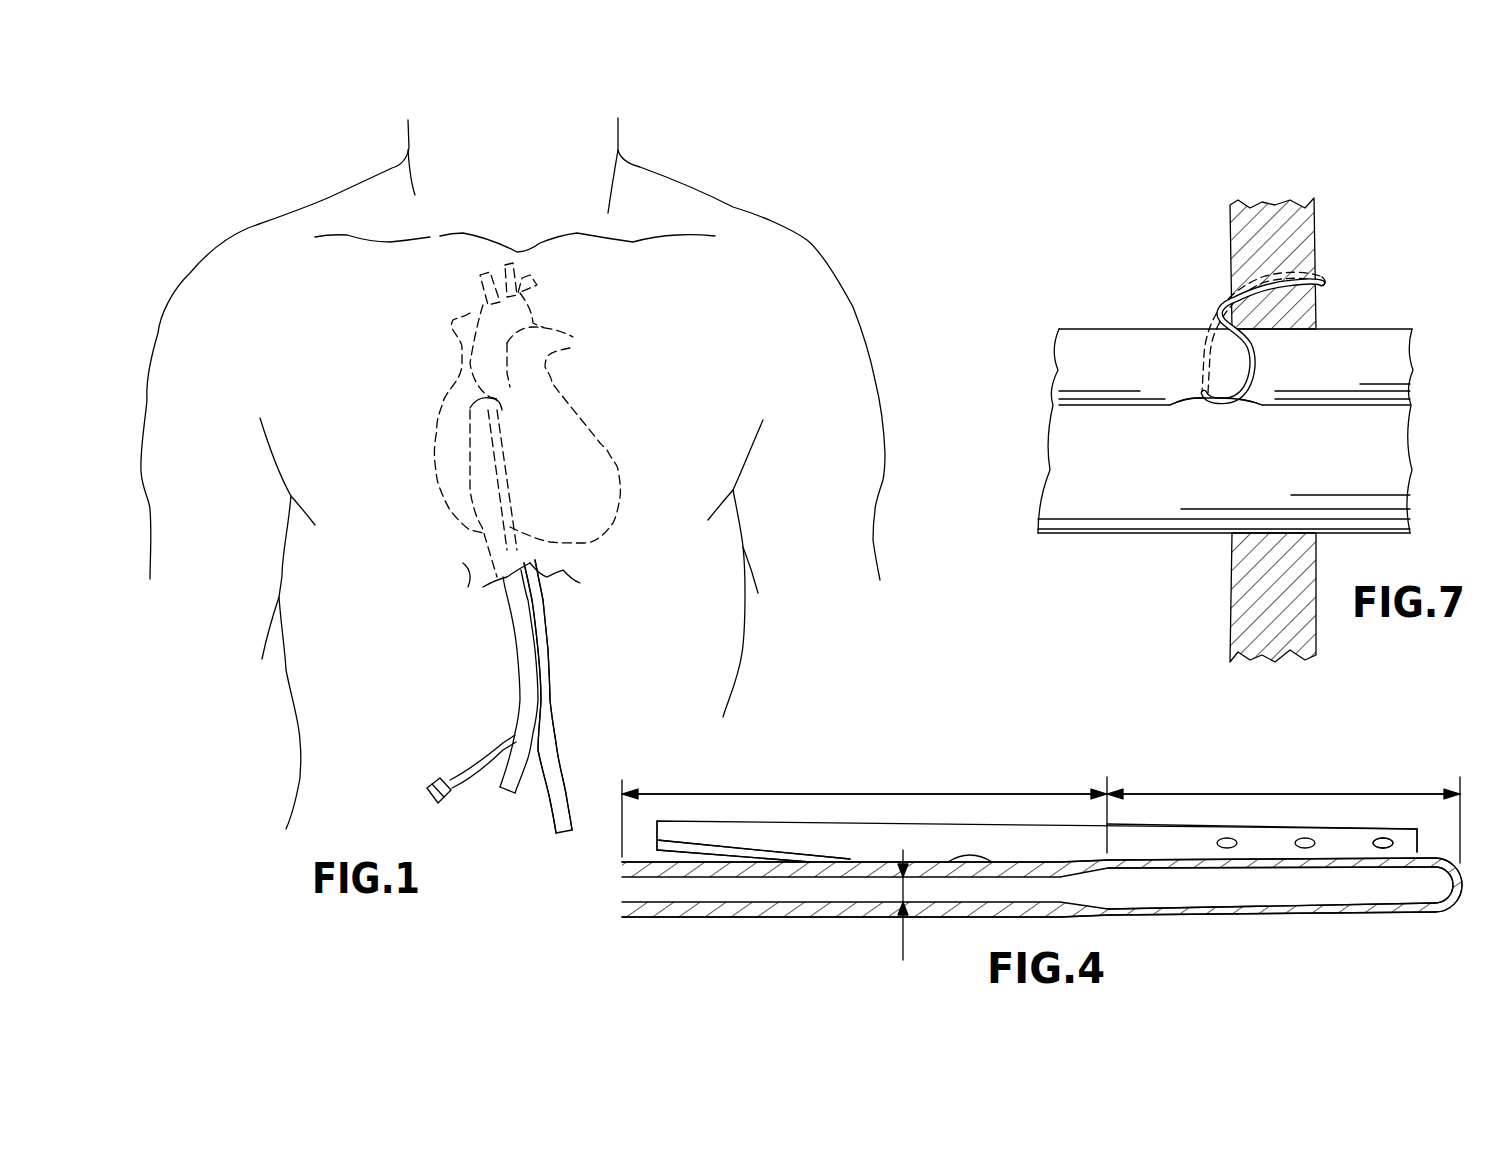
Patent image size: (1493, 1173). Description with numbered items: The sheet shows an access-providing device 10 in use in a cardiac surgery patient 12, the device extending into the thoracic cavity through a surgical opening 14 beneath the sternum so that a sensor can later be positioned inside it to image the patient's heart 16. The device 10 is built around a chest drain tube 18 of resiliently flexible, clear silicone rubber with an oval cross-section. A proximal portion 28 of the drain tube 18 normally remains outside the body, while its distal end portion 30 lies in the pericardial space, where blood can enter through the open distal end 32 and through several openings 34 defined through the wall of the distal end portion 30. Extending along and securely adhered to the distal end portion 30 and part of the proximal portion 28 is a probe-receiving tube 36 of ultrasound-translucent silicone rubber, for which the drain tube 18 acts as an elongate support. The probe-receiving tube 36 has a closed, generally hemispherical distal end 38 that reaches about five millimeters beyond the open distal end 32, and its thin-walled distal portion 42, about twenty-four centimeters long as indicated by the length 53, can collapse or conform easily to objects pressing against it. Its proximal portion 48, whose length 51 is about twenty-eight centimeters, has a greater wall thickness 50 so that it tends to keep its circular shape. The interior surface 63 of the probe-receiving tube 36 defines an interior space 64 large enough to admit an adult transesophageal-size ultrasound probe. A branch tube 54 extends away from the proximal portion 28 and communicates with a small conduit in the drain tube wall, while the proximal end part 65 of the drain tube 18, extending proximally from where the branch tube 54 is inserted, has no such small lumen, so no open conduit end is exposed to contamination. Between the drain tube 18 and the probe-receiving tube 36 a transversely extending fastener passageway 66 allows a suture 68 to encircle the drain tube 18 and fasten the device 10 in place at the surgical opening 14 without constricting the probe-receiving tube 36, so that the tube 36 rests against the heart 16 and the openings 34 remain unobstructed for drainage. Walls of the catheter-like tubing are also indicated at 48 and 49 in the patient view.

In FIG. 1, the access-providing device 10 is at (565, 699).
In FIG. 4, the access-providing device 10 is at (1138, 763).
In FIG. 1, the patient 12 is at (838, 268).
In FIG. 7, the patient 12 is at (1230, 217).
In FIG. 1, the surgical opening 14 is at (533, 565).
In FIG. 1, the heart 16 is at (607, 455).
In FIG. 4, the chest drain tube 18 is at (1202, 827).
In FIG. 7, the chest drain tube 18 is at (1089, 327).
In FIG. 4, the proximal portion 28 is at (795, 830).
In FIG. 4, the distal end portion 30 is at (1272, 830).
In FIG. 4, the open distal end 32 is at (1414, 843).
In FIG. 4, the openings 34 is at (1387, 843).
In FIG. 4, the probe-receiving tube 36 is at (1132, 915).
In FIG. 7, the probe-receiving tube 36 is at (1105, 535).
In FIG. 4, the closed distal end 38 is at (1463, 887).
In FIG. 4, the distal portion 42 is at (1297, 915).
In FIG. 1, the proximal portion 48 is at (543, 815).
In FIG. 4, the proximal portion 48 is at (705, 917).
In FIG. 1, the catheter wall 49 is at (563, 835).
In FIG. 4, the wall thickness 50 is at (903, 944).
In FIG. 4, the length 51 is at (890, 793).
In FIG. 4, the length 53 is at (1322, 790).
In FIG. 1, the branch tube 54 is at (477, 770).
In FIG. 4, the interior surface 63 is at (1381, 898).
In FIG. 4, the interior space 64 is at (1430, 890).
In FIG. 1, the proximal end part 65 is at (500, 780).
In FIG. 4, the proximal end part 65 is at (713, 821).
In FIG. 4, the fastener passageway 66 is at (968, 858).
In FIG. 7, the fastener passageway 66 is at (1238, 407).
In FIG. 1, the suture 68 is at (483, 573).
In FIG. 7, the suture 68 is at (1220, 300).